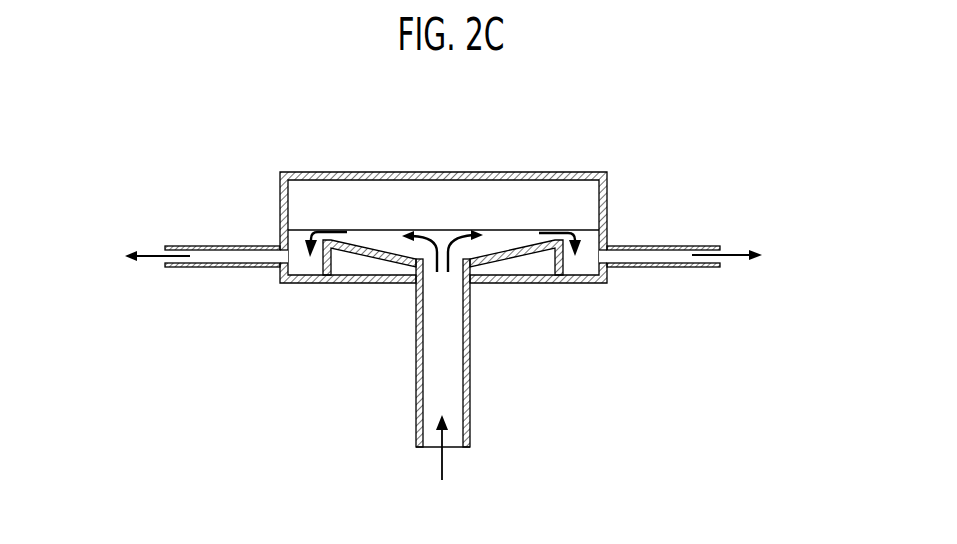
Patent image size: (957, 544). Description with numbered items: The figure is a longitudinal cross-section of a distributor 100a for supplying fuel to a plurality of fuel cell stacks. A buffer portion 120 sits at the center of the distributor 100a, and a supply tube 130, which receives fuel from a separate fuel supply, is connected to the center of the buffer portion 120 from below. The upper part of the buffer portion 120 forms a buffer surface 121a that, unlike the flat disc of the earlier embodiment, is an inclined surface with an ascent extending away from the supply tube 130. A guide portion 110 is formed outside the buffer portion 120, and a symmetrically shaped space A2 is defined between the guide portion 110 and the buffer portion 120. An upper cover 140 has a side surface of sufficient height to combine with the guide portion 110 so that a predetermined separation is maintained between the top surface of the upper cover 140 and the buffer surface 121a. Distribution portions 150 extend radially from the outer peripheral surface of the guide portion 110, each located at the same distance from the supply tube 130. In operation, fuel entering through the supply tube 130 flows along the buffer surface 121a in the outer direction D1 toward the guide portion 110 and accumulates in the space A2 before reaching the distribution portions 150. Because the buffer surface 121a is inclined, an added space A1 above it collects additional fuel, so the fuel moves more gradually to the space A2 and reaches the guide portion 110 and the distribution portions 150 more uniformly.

The distributor 100a is at (188, 119).
The guide portion 110 is at (607, 274).
The buffer portion 120 is at (562, 258).
The buffer surface 121a is at (372, 246).
The supply tube 130 is at (470, 402).
The upper cover 140 is at (437, 173).
The distribution portions 150 is at (200, 246).
The added space A1 is at (500, 246).
The space A2 is at (303, 258).
The outer direction D1 is at (445, 204).